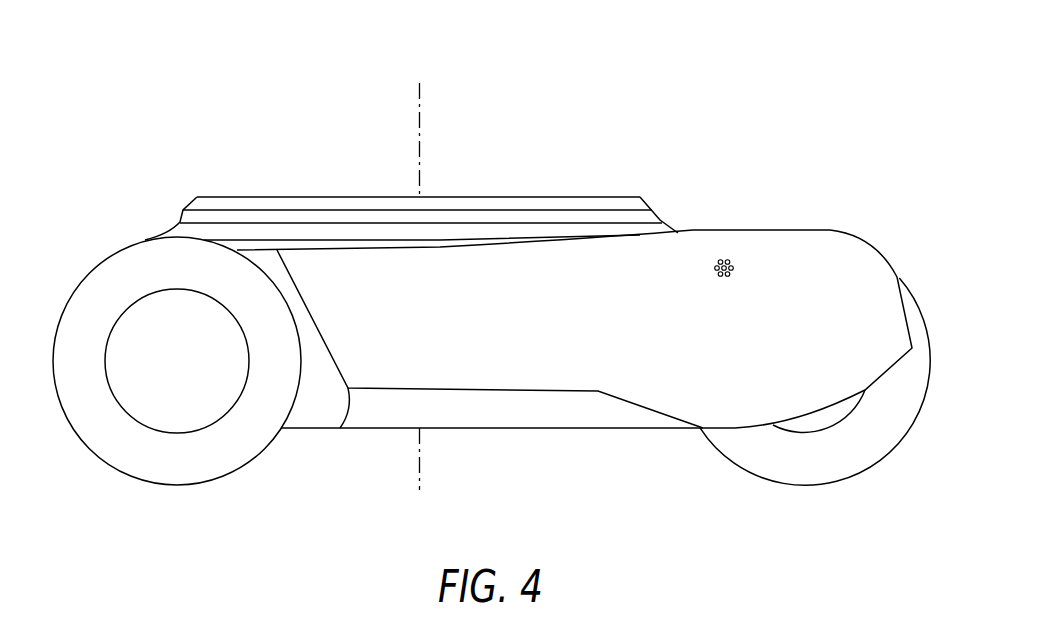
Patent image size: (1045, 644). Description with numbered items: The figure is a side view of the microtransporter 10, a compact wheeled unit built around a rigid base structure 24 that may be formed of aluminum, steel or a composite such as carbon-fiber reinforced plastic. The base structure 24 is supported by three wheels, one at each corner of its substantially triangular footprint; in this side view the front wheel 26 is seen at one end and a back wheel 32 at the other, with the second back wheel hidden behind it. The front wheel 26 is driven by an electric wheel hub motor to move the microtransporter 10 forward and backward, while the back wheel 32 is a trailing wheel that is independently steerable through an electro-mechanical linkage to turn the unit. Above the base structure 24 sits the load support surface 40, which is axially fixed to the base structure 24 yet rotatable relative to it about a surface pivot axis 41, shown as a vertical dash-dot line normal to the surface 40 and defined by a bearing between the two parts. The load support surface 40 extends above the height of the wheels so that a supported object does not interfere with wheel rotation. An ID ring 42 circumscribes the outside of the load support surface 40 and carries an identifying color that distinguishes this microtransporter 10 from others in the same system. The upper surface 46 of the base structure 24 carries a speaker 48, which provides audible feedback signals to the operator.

The microtransporter 10 is at (757, 82).
The base structure 24 is at (493, 430).
The front wheel 26 is at (893, 443).
The back wheel 32 is at (82, 443).
The load support surface 40 is at (260, 196).
The surface pivot axis 41 is at (420, 102).
The ID ring 42 is at (663, 220).
The upper surface 46 is at (860, 242).
The speaker 48 is at (737, 267).